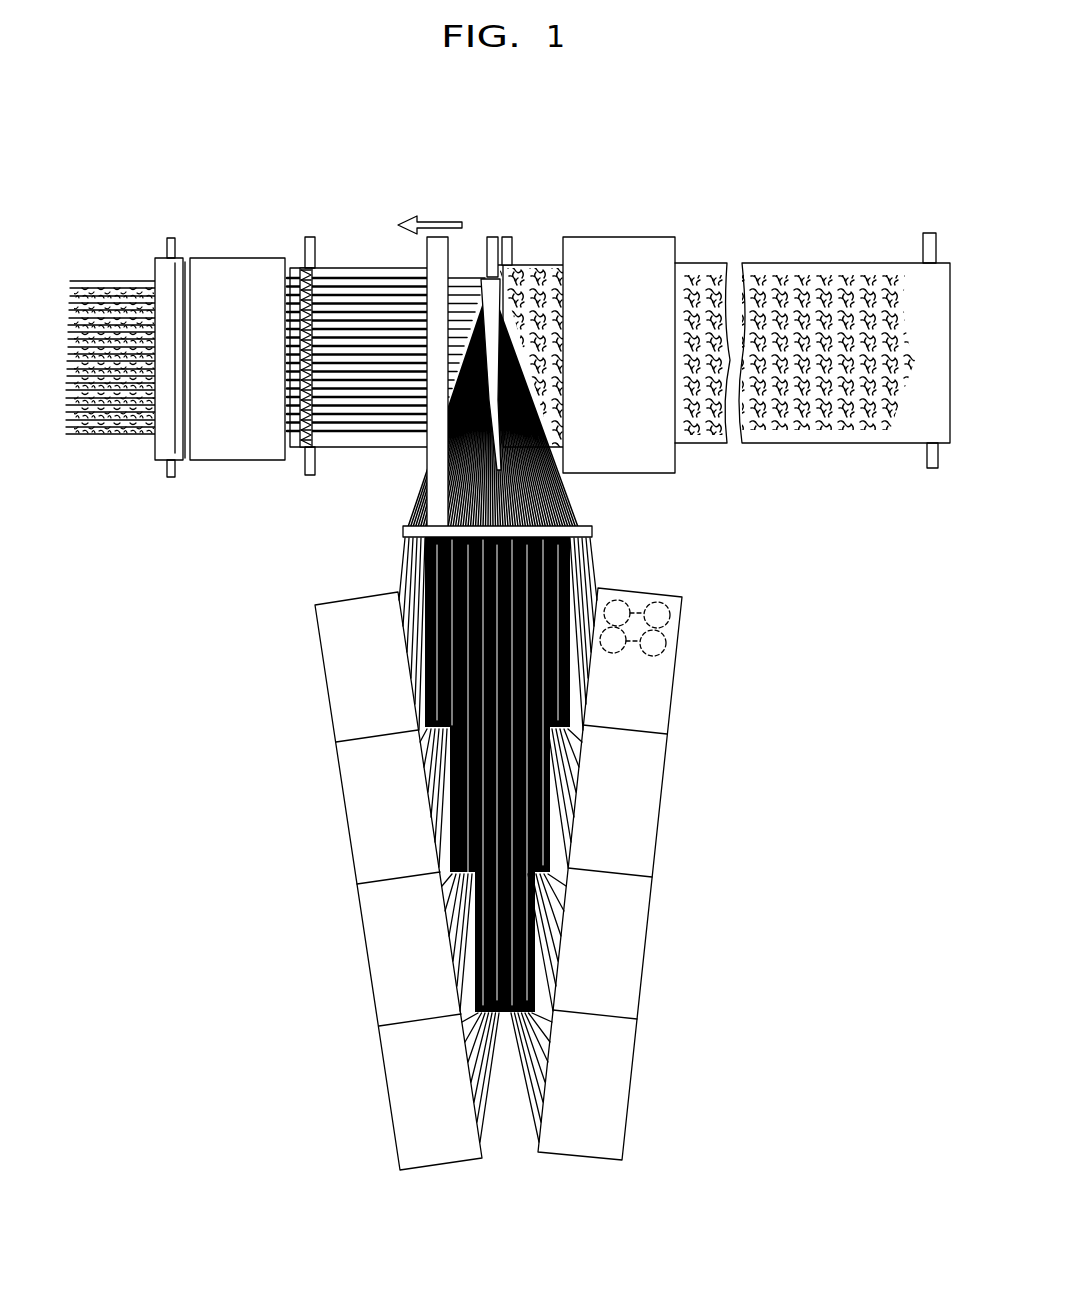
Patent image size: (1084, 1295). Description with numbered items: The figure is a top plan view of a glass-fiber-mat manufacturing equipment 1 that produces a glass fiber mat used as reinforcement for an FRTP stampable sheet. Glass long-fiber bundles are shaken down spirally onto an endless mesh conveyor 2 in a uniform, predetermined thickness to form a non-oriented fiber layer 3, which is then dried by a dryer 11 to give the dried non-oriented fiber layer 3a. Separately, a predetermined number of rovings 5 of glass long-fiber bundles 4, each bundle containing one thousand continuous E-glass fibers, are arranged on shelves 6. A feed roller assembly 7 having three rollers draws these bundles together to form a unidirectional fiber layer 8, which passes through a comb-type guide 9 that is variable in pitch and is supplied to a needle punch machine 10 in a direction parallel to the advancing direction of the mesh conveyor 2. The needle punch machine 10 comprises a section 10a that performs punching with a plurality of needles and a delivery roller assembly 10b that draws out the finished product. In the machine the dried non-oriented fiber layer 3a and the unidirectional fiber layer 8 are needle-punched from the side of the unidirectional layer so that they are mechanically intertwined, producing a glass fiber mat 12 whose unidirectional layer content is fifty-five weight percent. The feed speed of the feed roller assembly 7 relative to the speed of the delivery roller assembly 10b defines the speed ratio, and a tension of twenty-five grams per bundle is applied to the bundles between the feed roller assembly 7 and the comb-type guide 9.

The glass-fiber-mat manufacturing equipment 1 is at (666, 158).
The endless mesh conveyor 2 is at (818, 443).
The non-oriented fiber layer 3 is at (765, 405).
The non-oriented fiber layer after drying 3a is at (542, 287).
The glass long-fiber bundles 4 is at (593, 550).
The rovings 5 is at (677, 657).
The shelves 6 is at (375, 957).
The feed roller assembly 7 is at (475, 245).
The unidirectional fiber layer 8 is at (350, 287).
The comb-type guide 9 is at (310, 433).
The needle punch machine 10 is at (268, 185).
The punching section 10a is at (235, 277).
The delivery roller assembly 10b is at (163, 272).
The dryer 11 is at (637, 473).
The glass fiber mat 12 is at (125, 443).